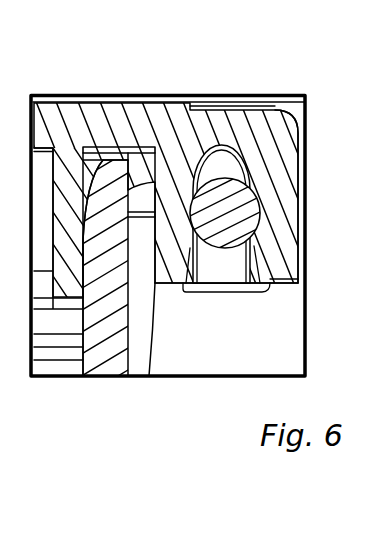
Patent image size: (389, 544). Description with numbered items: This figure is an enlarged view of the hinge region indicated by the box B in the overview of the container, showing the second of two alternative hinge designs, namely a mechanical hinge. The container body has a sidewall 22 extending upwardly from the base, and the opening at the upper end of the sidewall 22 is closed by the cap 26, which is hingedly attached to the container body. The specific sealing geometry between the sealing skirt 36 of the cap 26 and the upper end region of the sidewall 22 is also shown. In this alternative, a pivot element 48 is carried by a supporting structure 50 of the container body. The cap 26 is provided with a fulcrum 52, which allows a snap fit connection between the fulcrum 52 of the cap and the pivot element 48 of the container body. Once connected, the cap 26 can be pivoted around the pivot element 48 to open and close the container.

The box B is at (65, 94).
The cap 26 is at (118, 118).
The pivot element 48 is at (222, 207).
The fulcrum 52 is at (270, 195).
The supporting structure 50 is at (216, 270).
The sealing skirt 36 is at (62, 232).
The sidewall 22 is at (88, 262).